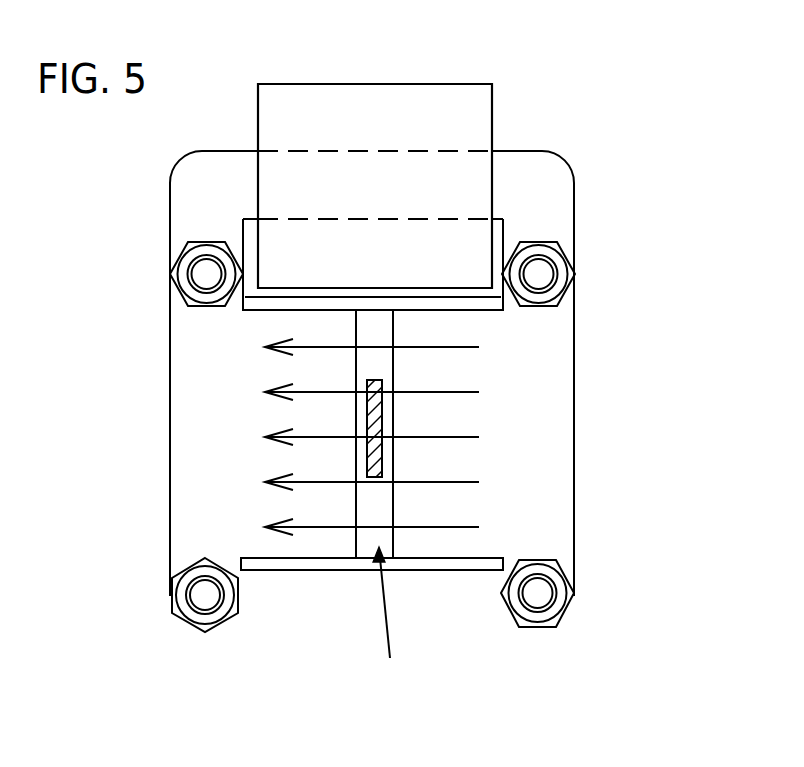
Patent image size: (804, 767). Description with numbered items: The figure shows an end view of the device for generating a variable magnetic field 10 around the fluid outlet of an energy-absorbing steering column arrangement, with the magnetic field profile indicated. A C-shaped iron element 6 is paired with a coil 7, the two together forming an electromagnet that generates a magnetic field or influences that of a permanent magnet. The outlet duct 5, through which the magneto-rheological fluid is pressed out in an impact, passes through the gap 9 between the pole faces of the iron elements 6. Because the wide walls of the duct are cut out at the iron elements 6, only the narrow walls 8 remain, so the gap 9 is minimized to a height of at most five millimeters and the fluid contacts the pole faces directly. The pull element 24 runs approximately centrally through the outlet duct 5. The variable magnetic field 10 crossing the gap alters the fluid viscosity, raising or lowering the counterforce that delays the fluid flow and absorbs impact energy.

The outlet duct 5 is at (391, 619).
The iron elements 6 is at (546, 174).
The coil 7 is at (473, 103).
The narrow walls 8 is at (413, 563).
The gap 9 is at (368, 506).
The variable magnetic field 10 is at (303, 528).
The pull element 24 is at (383, 410).